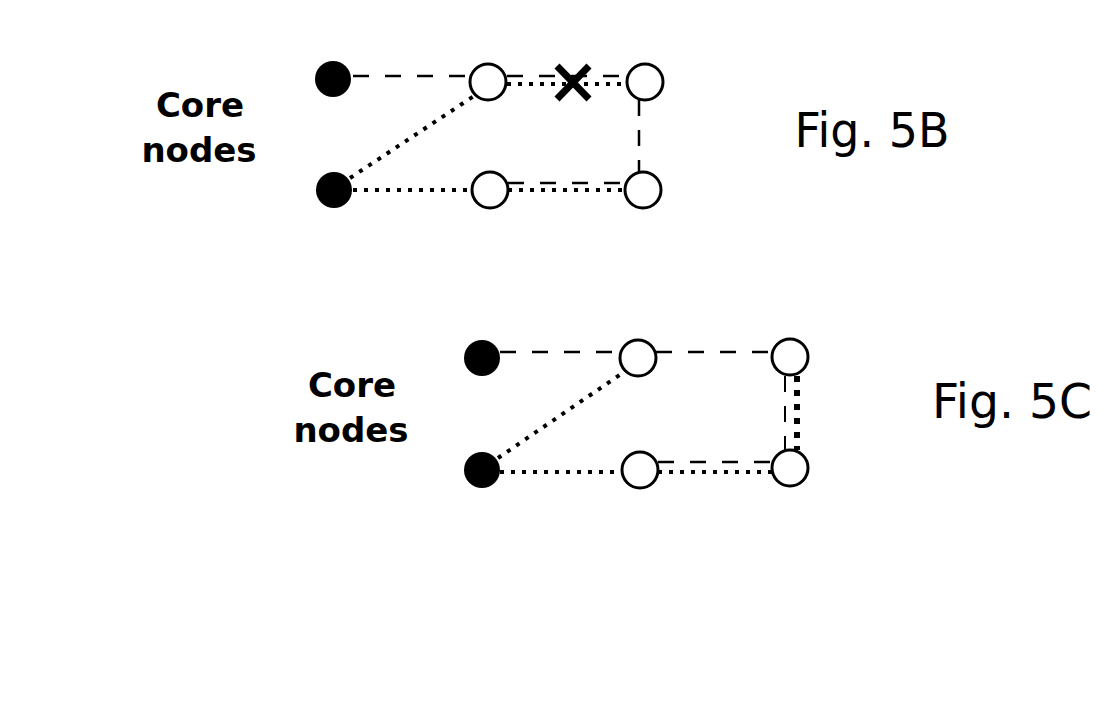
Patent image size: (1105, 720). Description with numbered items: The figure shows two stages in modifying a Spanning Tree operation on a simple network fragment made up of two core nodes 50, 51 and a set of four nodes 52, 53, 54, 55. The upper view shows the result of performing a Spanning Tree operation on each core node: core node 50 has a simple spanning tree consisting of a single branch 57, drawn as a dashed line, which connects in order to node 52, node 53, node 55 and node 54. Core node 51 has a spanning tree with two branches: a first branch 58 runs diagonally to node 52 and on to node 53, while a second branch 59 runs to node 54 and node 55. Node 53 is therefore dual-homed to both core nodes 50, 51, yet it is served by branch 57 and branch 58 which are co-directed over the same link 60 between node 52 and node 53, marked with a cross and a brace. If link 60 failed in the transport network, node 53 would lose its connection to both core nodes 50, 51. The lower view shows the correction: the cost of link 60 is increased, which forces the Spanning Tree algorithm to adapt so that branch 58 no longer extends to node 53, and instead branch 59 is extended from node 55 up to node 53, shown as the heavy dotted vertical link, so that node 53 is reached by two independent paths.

In FIG. 5B, the core node 50 is at (318, 66).
In FIG. 5C, the core node 50 is at (467, 344).
In FIG. 5B, the core node 51 is at (321, 177).
In FIG. 5C, the core node 51 is at (469, 456).
In FIG. 5B, the node 52 is at (479, 65).
In FIG. 5C, the node 52 is at (633, 341).
In FIG. 5B, the node 53 is at (645, 63).
In FIG. 5C, the node 53 is at (791, 339).
In FIG. 5B, the node 54 is at (497, 206).
In FIG. 5C, the node 54 is at (643, 490).
In FIG. 5B, the node 55 is at (652, 206).
In FIG. 5C, the node 55 is at (801, 489).
In FIG. 5B, the branch 57 is at (406, 73).
In FIG. 5B, the first branch 58 is at (385, 166).
In FIG. 5C, the first branch 58 is at (545, 434).
In FIG. 5B, the second branch 59 is at (410, 196).
In FIG. 5C, the second branch 59 is at (558, 480).
In FIG. 5B, the link 60 is at (517, 51).
In FIG. 5C, the link 60 is at (668, 326).